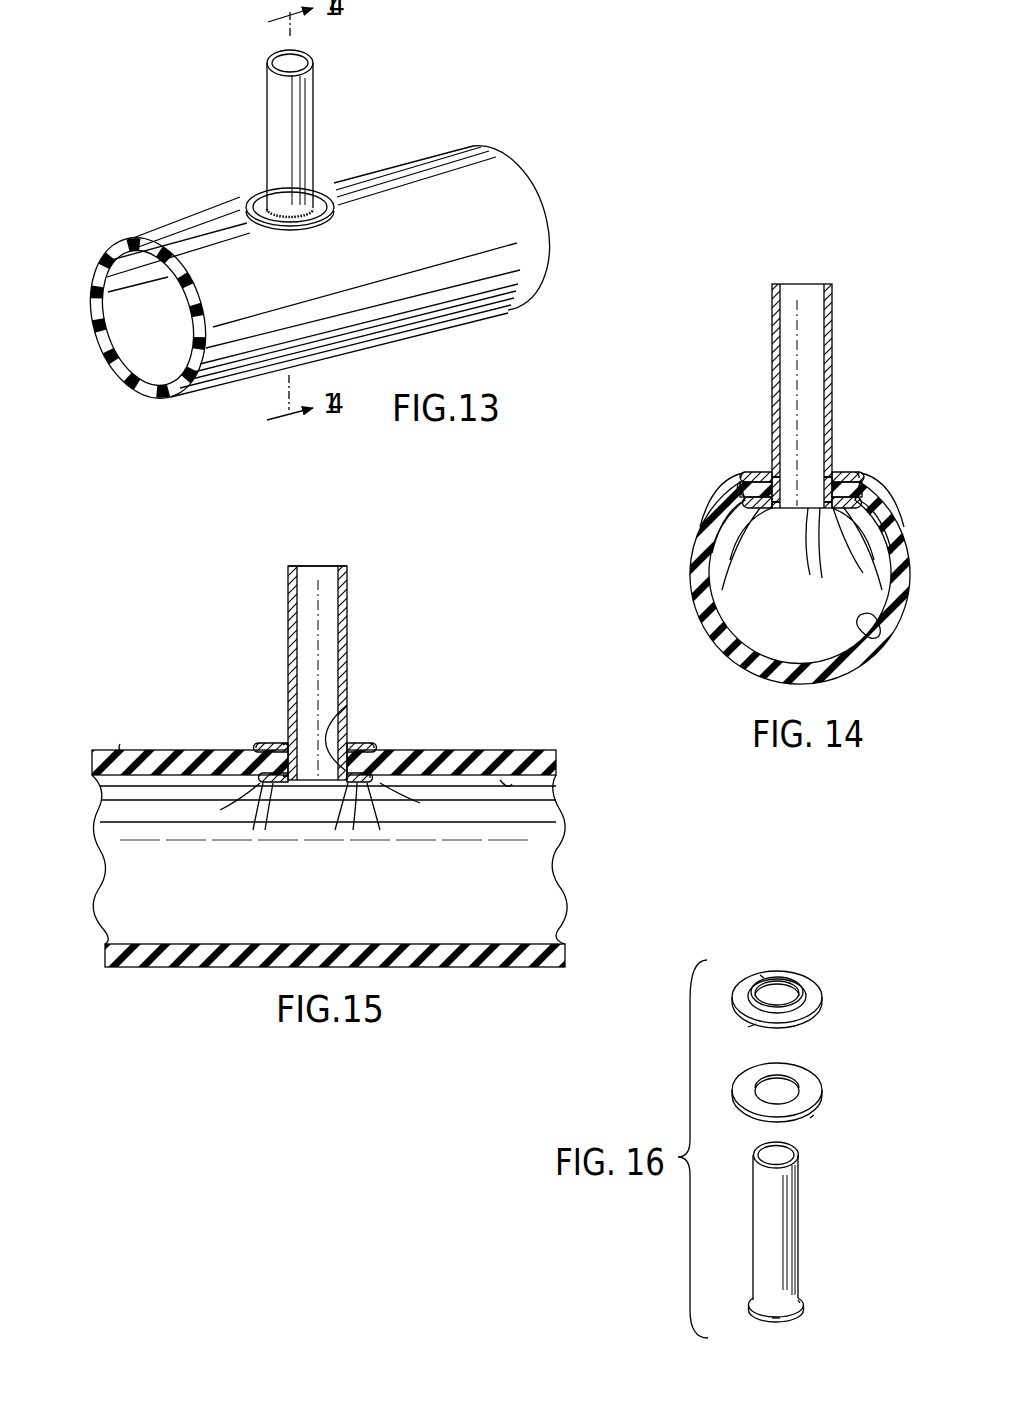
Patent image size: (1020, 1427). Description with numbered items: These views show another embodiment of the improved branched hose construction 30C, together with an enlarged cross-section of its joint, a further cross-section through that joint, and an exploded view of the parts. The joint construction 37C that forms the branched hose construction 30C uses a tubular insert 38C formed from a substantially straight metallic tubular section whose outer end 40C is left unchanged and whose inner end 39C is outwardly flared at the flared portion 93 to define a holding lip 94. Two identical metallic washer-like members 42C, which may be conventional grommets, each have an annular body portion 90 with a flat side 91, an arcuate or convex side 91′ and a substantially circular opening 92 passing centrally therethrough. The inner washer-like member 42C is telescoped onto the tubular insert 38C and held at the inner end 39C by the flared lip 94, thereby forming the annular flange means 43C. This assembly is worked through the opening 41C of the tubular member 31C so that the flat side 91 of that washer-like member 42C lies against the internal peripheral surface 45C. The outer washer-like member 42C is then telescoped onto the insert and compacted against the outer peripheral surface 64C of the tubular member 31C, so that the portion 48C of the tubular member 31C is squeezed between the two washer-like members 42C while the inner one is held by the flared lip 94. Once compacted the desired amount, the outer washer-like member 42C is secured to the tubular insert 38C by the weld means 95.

In FIG. 13, the branched hose construction 30C is at (462, 112).
In FIG. 14, the branched hose construction 30C is at (881, 405).
In FIG. 15, the branched hose construction 30C is at (398, 658).
In FIG. 13, the tubular member 31C is at (503, 190).
In FIG. 14, the tubular member 31C is at (692, 600).
In FIG. 15, the tubular member 31C is at (504, 750).
In FIG. 13, the joint construction 37C is at (325, 153).
In FIG. 14, the joint construction 37C is at (840, 470).
In FIG. 15, the joint construction 37C is at (372, 730).
In FIG. 13, the tubular insert 38C is at (267, 100).
In FIG. 14, the tubular insert 38C is at (772, 358).
In FIG. 15, the tubular insert 38C is at (288, 616).
In FIG. 16, the tubular insert 38C is at (798, 1200).
In FIG. 14, the inner end 39C is at (815, 512).
In FIG. 15, the inner end 39C is at (344, 784).
In FIG. 16, the inner end 39C is at (795, 1313).
In FIG. 15, the outer end 40C is at (344, 566).
In FIG. 16, the outer end 40C is at (800, 1152).
In FIG. 14, the opening 41C is at (870, 490).
In FIG. 13, the washer-like member 42C is at (258, 193).
In FIG. 14, the washer-like member 42C is at (752, 472).
In FIG. 15, the washer-like member 42C is at (280, 750).
In FIG. 16, the washer-like member 42C is at (808, 988).
In FIG. 14, the annular flange 43C is at (745, 500).
In FIG. 15, the annular flange 43C is at (364, 782).
In FIG. 14, the internal peripheral surface 45C is at (870, 640).
In FIG. 15, the internal peripheral surface 45C is at (512, 780).
In FIG. 14, the portion of the tubular member 48C is at (740, 483).
In FIG. 15, the portion of the tubular member 48C is at (380, 768).
In FIG. 14, the outer peripheral surface 64C is at (740, 490).
In FIG. 15, the outer peripheral surface 64C is at (120, 748).
In FIG. 14, the annular body portion 90 is at (745, 512).
In FIG. 15, the annular body portion 90 is at (264, 784).
In FIG. 16, the annular body portion 90 is at (790, 975).
In FIG. 15, the flat side 91 is at (250, 760).
In FIG. 16, the flat side 91 is at (748, 1027).
In FIG. 14, the arcuate or convex side 91′ is at (865, 478).
In FIG. 15, the arcuate or convex side 91′ is at (376, 748).
In FIG. 16, the arcuate or convex side 91′ is at (762, 975).
In FIG. 15, the circular opening 92 is at (344, 712).
In FIG. 16, the circular opening 92 is at (800, 998).
In FIG. 14, the outwardly flared portion 93 is at (820, 540).
In FIG. 15, the outwardly flared portion 93 is at (288, 780).
In FIG. 16, the outwardly flared portion 93 is at (777, 1322).
In FIG. 14, the holding lip 94 is at (860, 515).
In FIG. 15, the holding lip 94 is at (356, 782).
In FIG. 16, the holding lip 94 is at (800, 1302).
In FIG. 13, the weld means 95 is at (290, 213).
In FIG. 14, the weld means 95 is at (770, 470).
In FIG. 15, the weld means 95 is at (284, 748).